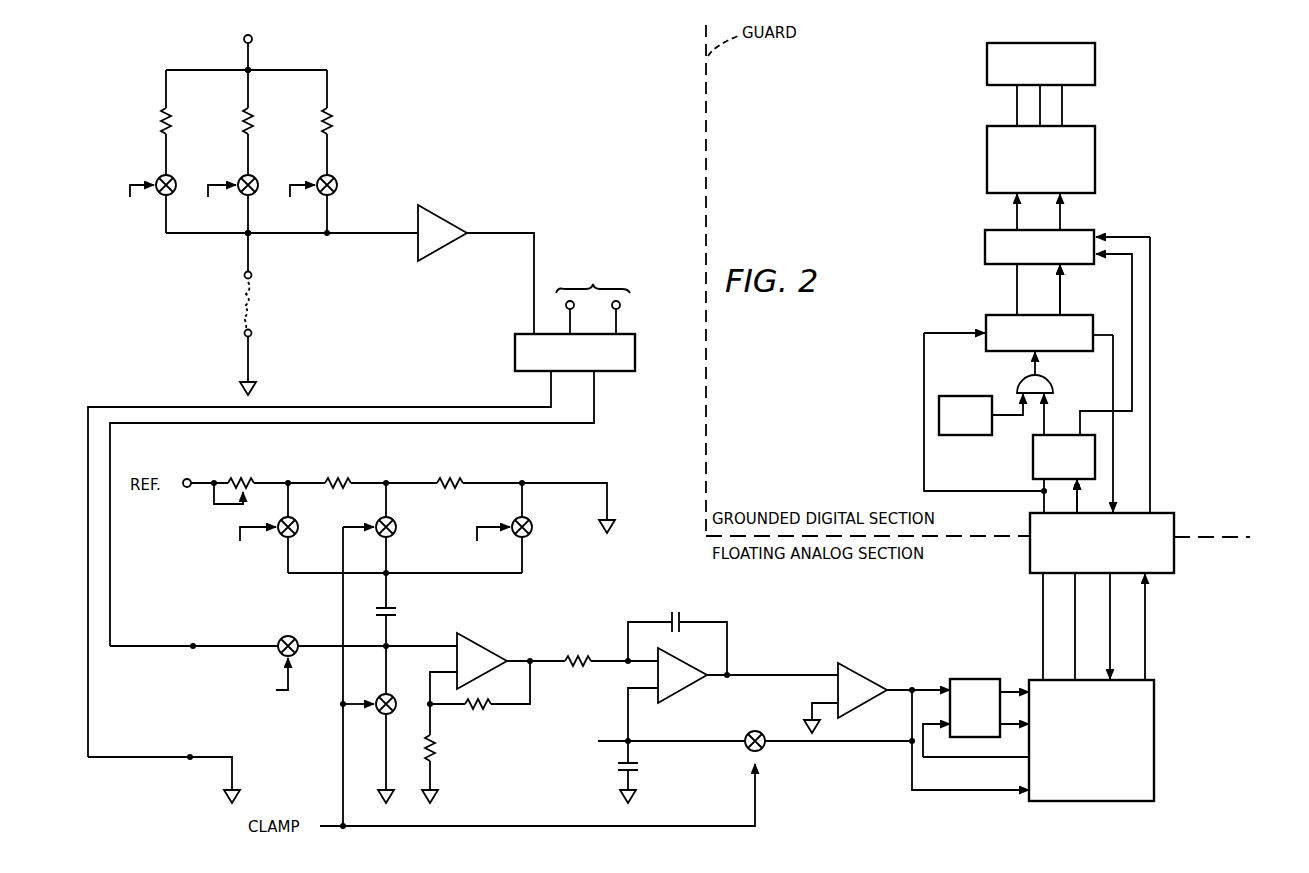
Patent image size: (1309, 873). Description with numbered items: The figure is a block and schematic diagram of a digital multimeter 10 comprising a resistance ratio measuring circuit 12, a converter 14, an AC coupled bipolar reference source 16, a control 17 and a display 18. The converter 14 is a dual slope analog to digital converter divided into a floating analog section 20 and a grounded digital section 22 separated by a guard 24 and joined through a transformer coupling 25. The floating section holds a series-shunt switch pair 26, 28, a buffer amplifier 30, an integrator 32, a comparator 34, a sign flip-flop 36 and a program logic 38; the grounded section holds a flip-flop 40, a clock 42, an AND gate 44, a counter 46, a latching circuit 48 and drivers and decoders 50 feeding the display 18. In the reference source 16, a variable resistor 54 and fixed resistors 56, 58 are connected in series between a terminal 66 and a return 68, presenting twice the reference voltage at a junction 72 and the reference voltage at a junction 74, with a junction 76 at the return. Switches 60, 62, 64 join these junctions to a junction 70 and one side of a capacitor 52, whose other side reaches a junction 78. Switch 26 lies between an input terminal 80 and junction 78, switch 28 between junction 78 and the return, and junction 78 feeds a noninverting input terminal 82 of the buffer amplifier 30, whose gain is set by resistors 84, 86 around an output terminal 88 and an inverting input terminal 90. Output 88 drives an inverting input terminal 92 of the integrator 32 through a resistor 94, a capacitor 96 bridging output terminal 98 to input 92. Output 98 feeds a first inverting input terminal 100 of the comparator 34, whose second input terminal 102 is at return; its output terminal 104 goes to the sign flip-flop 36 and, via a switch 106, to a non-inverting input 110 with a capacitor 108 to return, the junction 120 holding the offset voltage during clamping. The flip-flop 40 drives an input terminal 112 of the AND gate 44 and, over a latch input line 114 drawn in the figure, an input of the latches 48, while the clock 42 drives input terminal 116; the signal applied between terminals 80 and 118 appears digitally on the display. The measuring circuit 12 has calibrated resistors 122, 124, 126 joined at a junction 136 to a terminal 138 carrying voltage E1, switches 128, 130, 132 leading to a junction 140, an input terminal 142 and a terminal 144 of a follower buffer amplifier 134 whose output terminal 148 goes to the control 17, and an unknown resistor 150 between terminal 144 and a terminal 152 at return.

The digital multimeter 10 is at (125, 318).
The resistance ratio measuring circuit 12 is at (432, 100).
The converter 14 is at (872, 615).
The AC coupled bipolar reference source 16 is at (536, 581).
The control 17 is at (636, 356).
The display 18 is at (1097, 66).
The floating analog section 20 is at (1216, 578).
The grounded digital section 22 is at (1218, 473).
The guard 24 is at (1210, 535).
The transformer coupling 25 is at (1176, 518).
The series switch 26 is at (293, 640).
The shunt switch 28 is at (396, 710).
The buffer amplifier 30 is at (481, 638).
The integrator 32 is at (680, 658).
The comparator 34 is at (862, 676).
The flip-flop 36 is at (975, 678).
The program logic 38 is at (1157, 690).
The flip-flop 40 is at (1032, 460).
The clock 42 is at (962, 395).
The AND gate 44 is at (1052, 380).
The counter 46 is at (988, 314).
The latching circuit 48 is at (1096, 232).
The drivers and decoders 50 is at (1097, 155).
The capacitor 52 is at (390, 606).
The variable resistor 54 is at (243, 478).
The fixed resistor 56 is at (340, 478).
The fixed resistor 58 is at (452, 478).
The switch 60 is at (298, 523).
The switch 62 is at (396, 523).
The switch 64 is at (532, 523).
The terminal 66 is at (189, 479).
The return 68 is at (243, 390).
The junction 70 is at (384, 577).
The junction 72 is at (289, 480).
The junction 74 is at (388, 480).
The junction 76 is at (524, 480).
The junction 78 is at (390, 645).
The input terminal 80 is at (196, 643).
The noninverting input terminal 82 is at (455, 642).
The resistor 84 is at (480, 710).
The resistor 86 is at (436, 752).
The output terminal 88 is at (530, 658).
The inverting input terminal 90 is at (452, 671).
The inverting input terminal 92 is at (656, 665).
The resistor 94 is at (580, 658).
The capacitor 96 is at (682, 618).
The output terminal 98 is at (706, 680).
The first inverting input terminal 100 is at (836, 672).
The second input terminal 102 is at (832, 700).
The output terminal 104 is at (913, 685).
The switch 106 is at (766, 755).
The capacitor 108 is at (640, 764).
The non-inverting input 110 is at (660, 690).
The input terminal 112 is at (1050, 396).
The latch strobe line 114 is at (1096, 258).
The input terminal 116 is at (1018, 396).
The input terminal 118 is at (192, 760).
The junction 120 is at (660, 742).
The calibrated resistor 122 is at (168, 118).
The calibrated resistor 124 is at (250, 118).
The calibrated resistor 126 is at (329, 118).
The switch 128 is at (174, 178).
The switch 130 is at (256, 178).
The switch 132 is at (335, 178).
The buffer amplifier 134 is at (444, 257).
The junction 136 is at (251, 68).
The terminal 138 is at (243, 37).
The junction 140 is at (251, 236).
The input terminal 142 is at (416, 240).
The terminal 144 is at (244, 276).
The output terminal 148 is at (467, 233).
The resistor 150 is at (244, 306).
The terminal 152 is at (244, 334).